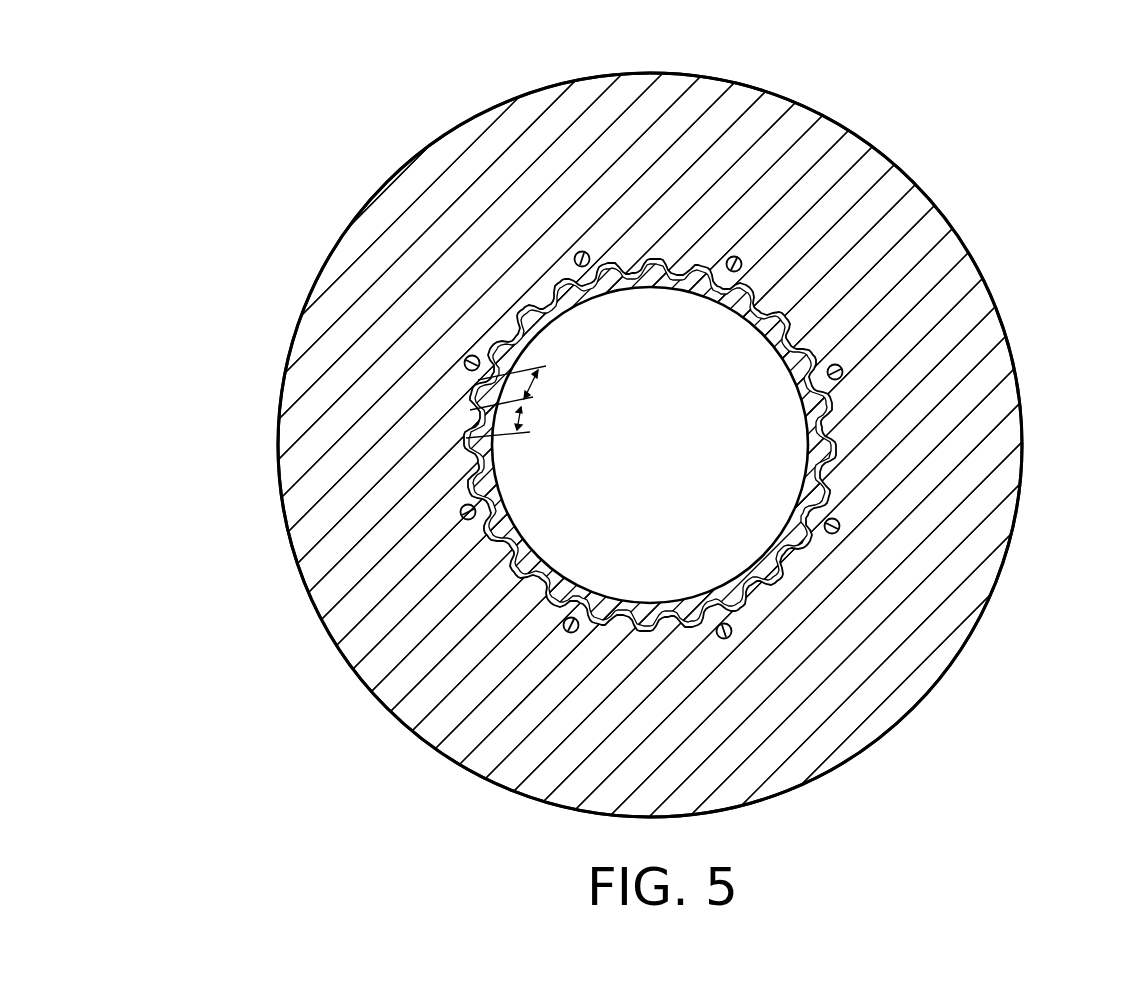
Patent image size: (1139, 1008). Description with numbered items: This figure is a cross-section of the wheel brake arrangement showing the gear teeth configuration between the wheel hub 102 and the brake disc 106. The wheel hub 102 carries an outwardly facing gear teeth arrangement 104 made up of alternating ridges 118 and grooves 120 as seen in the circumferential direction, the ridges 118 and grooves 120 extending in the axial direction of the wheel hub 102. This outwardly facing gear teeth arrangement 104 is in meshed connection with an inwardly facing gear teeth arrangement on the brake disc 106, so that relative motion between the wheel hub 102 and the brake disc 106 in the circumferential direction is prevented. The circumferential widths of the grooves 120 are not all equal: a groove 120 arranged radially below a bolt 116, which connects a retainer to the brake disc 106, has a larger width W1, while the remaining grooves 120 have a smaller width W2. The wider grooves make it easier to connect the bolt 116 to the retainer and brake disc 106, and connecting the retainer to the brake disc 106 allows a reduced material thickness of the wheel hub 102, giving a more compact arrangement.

The wheel hub 102 is at (845, 430).
The outwardly facing gear teeth arrangement 104 is at (978, 252).
The brake disc 106 is at (840, 200).
The bolt 116 is at (578, 253).
The ridges 118 is at (657, 257).
The grooves 120 is at (473, 413).
The larger groove width W1 is at (521, 388).
The groove width of remaining grooves W2 is at (513, 427).